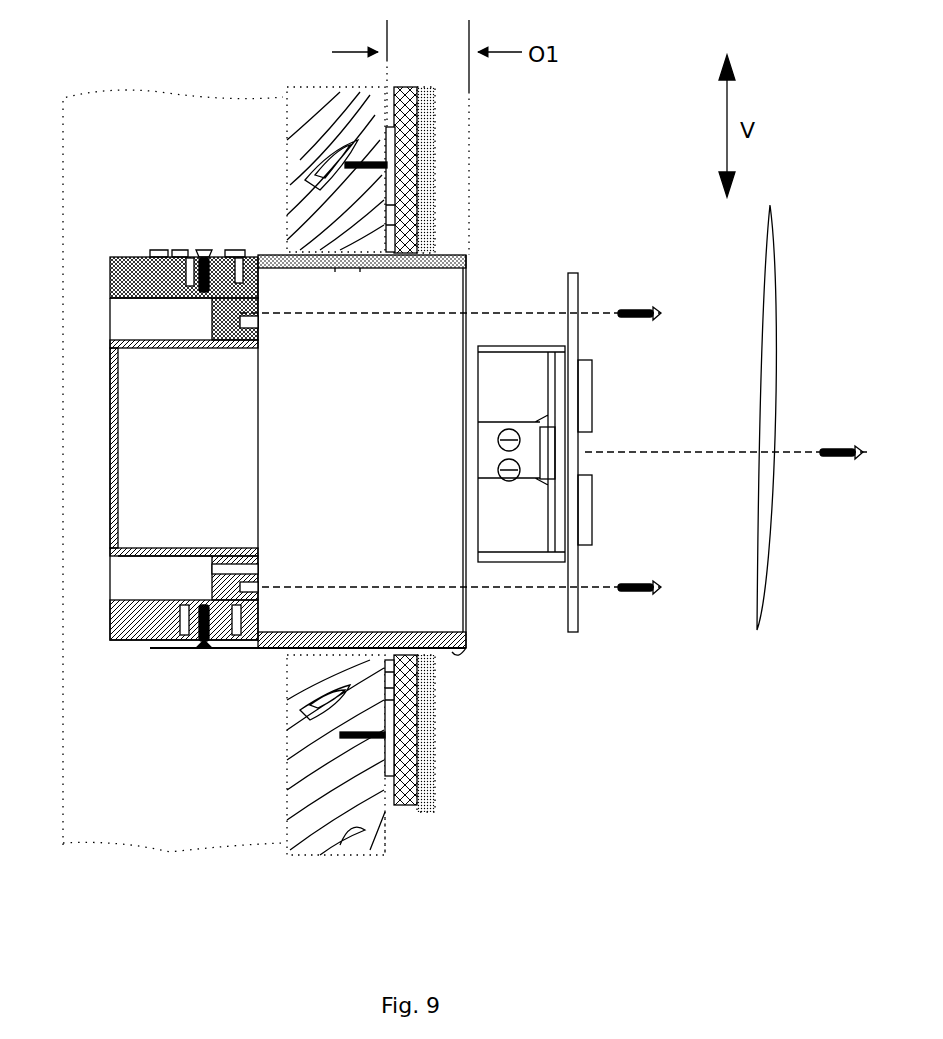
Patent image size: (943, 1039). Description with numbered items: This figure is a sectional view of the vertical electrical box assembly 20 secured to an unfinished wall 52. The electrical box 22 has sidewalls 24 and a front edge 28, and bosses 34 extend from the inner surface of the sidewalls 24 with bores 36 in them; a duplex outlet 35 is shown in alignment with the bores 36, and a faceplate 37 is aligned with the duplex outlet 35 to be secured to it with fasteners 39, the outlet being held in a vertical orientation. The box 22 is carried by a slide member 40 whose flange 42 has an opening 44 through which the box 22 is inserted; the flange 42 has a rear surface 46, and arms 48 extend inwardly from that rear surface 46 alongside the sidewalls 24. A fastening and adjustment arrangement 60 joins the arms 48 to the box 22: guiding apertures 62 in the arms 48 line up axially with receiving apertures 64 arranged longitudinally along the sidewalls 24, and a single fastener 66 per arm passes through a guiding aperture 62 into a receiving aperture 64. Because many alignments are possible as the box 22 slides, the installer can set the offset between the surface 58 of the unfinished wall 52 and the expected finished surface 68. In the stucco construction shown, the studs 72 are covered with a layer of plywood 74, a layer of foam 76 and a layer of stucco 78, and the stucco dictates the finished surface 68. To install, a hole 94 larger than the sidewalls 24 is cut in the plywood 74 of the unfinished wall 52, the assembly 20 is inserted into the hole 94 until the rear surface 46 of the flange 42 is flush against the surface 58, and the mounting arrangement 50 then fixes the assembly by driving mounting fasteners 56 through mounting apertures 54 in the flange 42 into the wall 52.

The electrical box assembly 20 is at (120, 162).
The electrical box 22 is at (462, 255).
The sidewalls 24 is at (335, 268).
The front edge 28 is at (468, 297).
The bosses 34 is at (258, 343).
The duplex outlet 35 is at (574, 273).
The bores 36 is at (255, 332).
The faceplate 37 is at (762, 260).
The fasteners 39 is at (633, 308).
The slide member 40 is at (360, 268).
The flange 42 is at (388, 150).
The opening 44 is at (388, 660).
The rear surface 46 is at (380, 218).
The arms 48 is at (155, 250).
The mounting arrangement 50 is at (410, 163).
The unfinished wall 52 is at (352, 845).
The mounting apertures 54 is at (396, 735).
The mounting fasteners 56 is at (360, 732).
The surface 58 is at (392, 836).
The fastening and adjustment arrangement 60 is at (207, 210).
The guiding apertures 62 is at (238, 250).
The receiving apertures 64 is at (240, 292).
The fastener 66 is at (200, 255).
The expected finished surface 68 is at (432, 670).
The studs 72 is at (130, 822).
The layer of plywood 74 is at (336, 471).
The layer of foam 76 is at (395, 790).
The layer of stucco 78 is at (420, 762).
The hole 94 is at (230, 650).